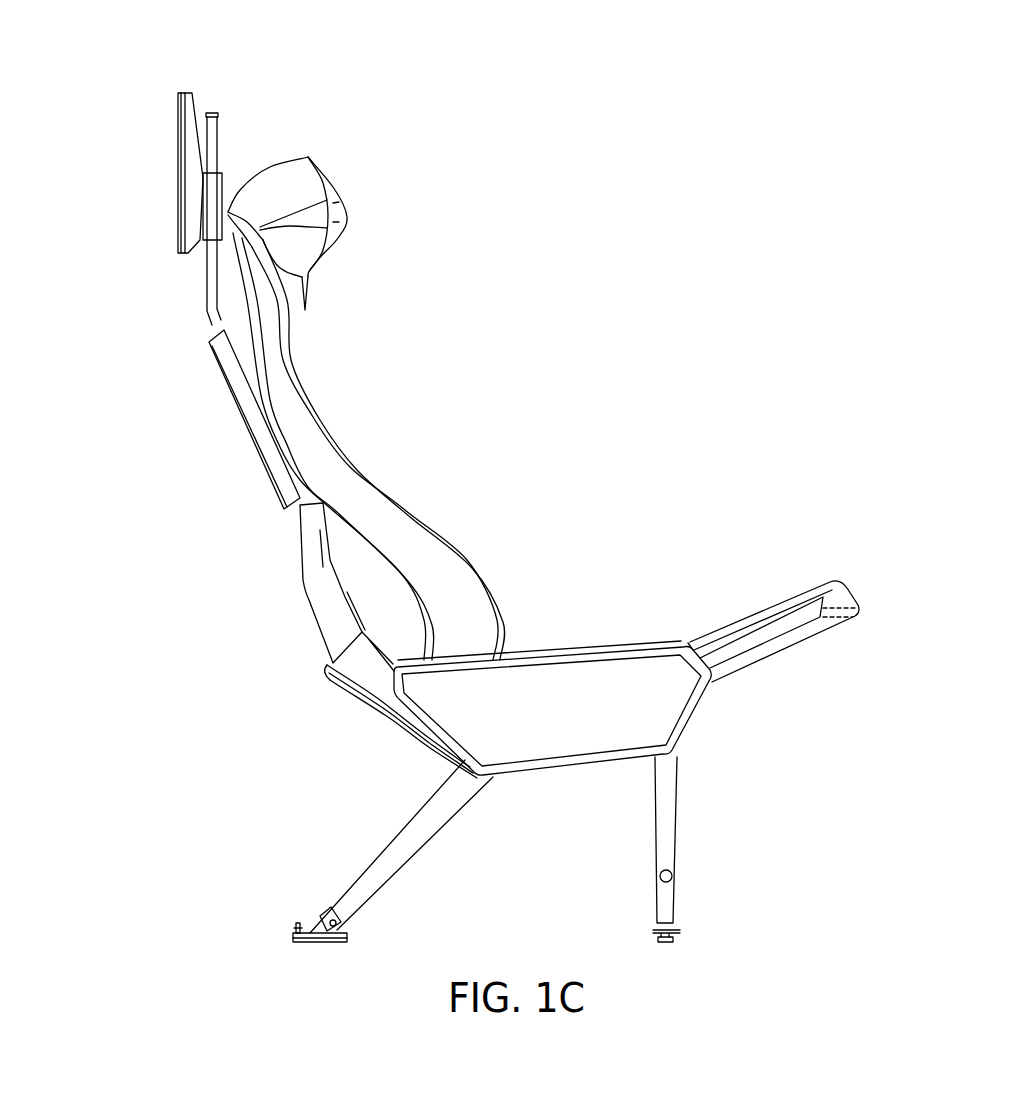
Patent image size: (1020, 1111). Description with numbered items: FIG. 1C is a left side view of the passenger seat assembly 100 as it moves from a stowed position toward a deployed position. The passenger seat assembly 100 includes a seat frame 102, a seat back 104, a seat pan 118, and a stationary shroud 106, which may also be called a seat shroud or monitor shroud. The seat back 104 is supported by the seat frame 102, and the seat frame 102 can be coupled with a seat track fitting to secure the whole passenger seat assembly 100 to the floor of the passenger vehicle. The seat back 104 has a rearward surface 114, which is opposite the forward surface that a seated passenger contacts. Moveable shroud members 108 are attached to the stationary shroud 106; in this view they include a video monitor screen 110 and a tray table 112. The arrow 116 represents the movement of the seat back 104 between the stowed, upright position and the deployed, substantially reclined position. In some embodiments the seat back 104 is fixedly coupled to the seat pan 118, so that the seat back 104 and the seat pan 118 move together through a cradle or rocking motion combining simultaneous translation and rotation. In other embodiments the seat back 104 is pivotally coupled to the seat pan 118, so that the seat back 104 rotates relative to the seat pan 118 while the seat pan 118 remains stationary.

The passenger seat assembly 100 is at (558, 103).
The seat frame 102 is at (675, 698).
The seat back 104 is at (445, 563).
The stationary shroud 106 is at (320, 595).
The moveable shroud members 108 is at (217, 403).
The video monitor screen 110 is at (184, 120).
The tray table 112 is at (268, 447).
The rearward surface 114 is at (323, 500).
The arrow 116 is at (508, 609).
The seat pan 118 is at (840, 593).